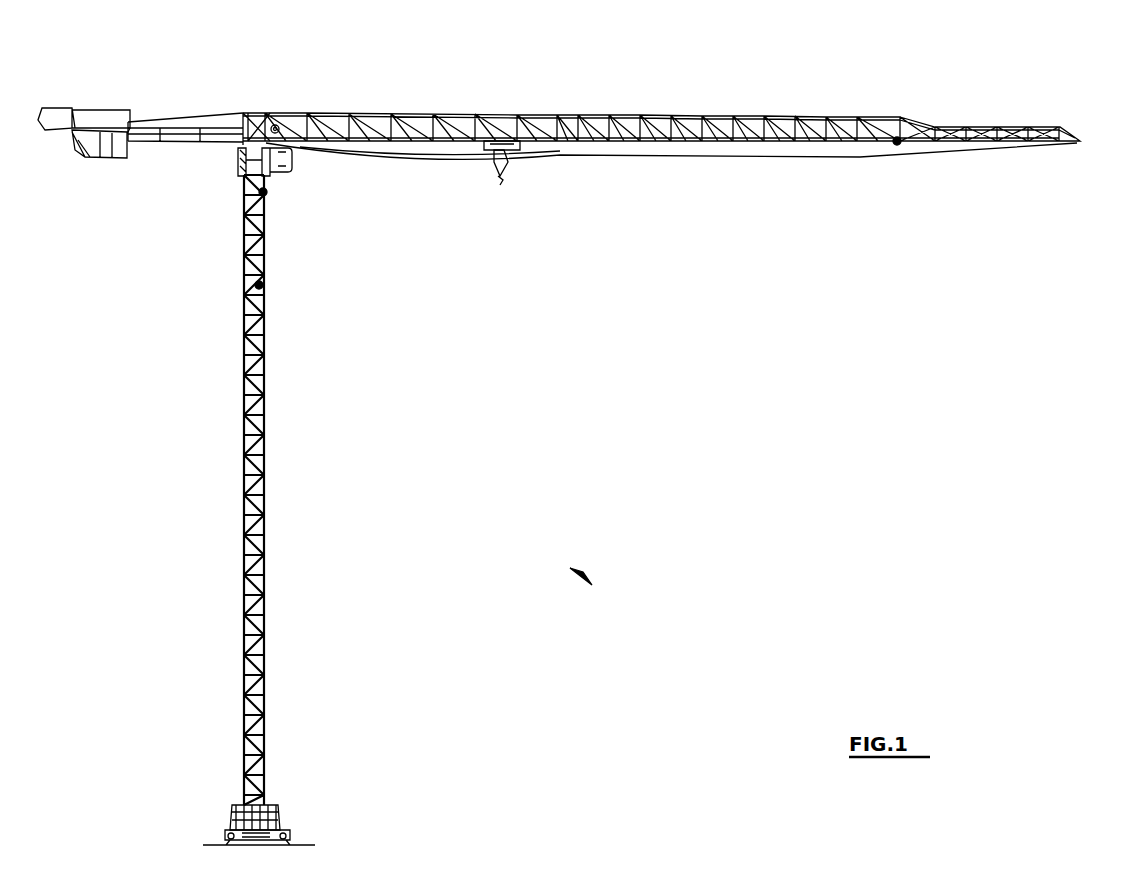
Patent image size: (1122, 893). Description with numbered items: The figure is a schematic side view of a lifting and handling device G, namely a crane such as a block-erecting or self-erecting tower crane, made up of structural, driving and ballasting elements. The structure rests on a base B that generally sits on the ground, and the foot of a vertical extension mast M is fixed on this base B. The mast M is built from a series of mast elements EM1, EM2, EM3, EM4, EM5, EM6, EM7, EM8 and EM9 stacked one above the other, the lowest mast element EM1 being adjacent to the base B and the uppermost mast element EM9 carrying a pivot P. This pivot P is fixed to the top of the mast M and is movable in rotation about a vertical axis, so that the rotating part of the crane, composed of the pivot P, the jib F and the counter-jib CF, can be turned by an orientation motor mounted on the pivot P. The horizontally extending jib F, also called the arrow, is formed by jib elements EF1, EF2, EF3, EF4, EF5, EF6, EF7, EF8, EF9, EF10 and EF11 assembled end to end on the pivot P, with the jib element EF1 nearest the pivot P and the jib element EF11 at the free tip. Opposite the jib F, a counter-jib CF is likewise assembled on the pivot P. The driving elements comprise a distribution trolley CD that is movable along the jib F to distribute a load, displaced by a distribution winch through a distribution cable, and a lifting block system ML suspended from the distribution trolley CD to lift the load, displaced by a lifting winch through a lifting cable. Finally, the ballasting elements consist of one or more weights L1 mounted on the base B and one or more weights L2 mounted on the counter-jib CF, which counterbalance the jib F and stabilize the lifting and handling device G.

The jib element EF1 is at (283, 113).
The jib element EF2 is at (452, 112).
The jib element EF3 is at (600, 113).
The jib element EF4 is at (662, 113).
The jib element EF5 is at (736, 114).
The jib element EF6 is at (784, 116).
The jib element EF7 is at (847, 117).
The jib element EF8 is at (928, 123).
The jib element EF9 is at (992, 126).
The jib element EF10 is at (1048, 126).
The jib element EF11 is at (1074, 130).
The mast element EM1 is at (244, 762).
The mast element EM2 is at (244, 662).
The mast element EM3 is at (244, 600).
The mast element EM4 is at (244, 540).
The mast element EM5 is at (244, 472).
The mast element EM6 is at (244, 412).
The mast element EM7 is at (244, 360).
The mast element EM8 is at (244, 272).
The mast element EM9 is at (244, 218).
The jib F is at (897, 145).
The mast M is at (263, 286).
The pivot P is at (267, 193).
The counter-jib CF is at (186, 150).
The weight L2 is at (112, 160).
The weight L1 is at (285, 808).
The base B is at (286, 838).
The distribution trolley CD is at (510, 152).
The lifting block system ML is at (504, 176).
The lifting and handling device G is at (586, 578).